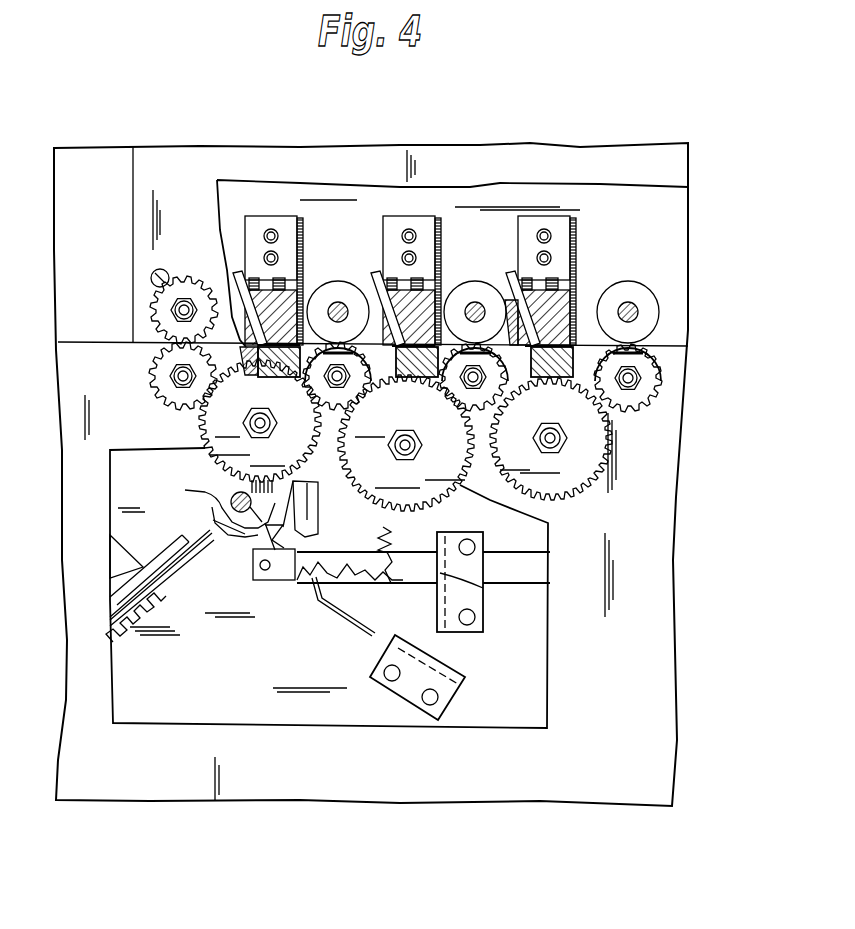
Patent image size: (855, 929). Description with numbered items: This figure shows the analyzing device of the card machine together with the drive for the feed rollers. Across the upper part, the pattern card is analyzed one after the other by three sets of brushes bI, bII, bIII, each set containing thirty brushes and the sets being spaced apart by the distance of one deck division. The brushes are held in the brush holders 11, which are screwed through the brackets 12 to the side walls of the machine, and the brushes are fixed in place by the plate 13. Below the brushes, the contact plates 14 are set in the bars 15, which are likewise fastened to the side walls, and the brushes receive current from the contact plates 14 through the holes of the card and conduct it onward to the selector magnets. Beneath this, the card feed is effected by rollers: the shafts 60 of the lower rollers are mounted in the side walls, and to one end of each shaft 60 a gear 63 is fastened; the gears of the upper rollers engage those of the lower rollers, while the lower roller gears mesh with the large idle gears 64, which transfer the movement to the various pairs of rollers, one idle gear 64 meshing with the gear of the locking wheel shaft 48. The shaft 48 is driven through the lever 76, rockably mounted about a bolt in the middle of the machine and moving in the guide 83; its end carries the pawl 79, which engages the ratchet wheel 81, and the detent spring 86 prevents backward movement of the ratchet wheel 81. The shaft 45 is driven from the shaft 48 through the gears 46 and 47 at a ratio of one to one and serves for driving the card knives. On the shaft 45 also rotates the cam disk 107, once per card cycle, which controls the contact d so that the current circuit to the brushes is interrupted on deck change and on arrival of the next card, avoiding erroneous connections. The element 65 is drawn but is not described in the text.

The bracket 12 is at (285, 228).
The plate 13 is at (270, 303).
The brushes bI is at (232, 277).
The brushes bII is at (372, 277).
The brushes bIII is at (518, 278).
The contact plate 14 is at (272, 374).
The bar 15 is at (262, 350).
The brush holder 11 is at (517, 318).
The shaft of lower roller 60 is at (162, 357).
The idle gear 64 is at (200, 418).
The gear 63 is at (645, 383).
The gear 46 is at (200, 493).
The shaft 45 is at (231, 497).
The cam disk 107 is at (213, 520).
The pawl 79 is at (263, 542).
The gear 47 is at (290, 537).
The locking wheel shaft 48 is at (323, 548).
The ratchet wheel 81 is at (303, 537).
The spring 65 is at (391, 537).
The lever 76 is at (530, 563).
The guide 83 is at (465, 595).
The detent spring 86 is at (357, 628).
The contact d is at (215, 538).